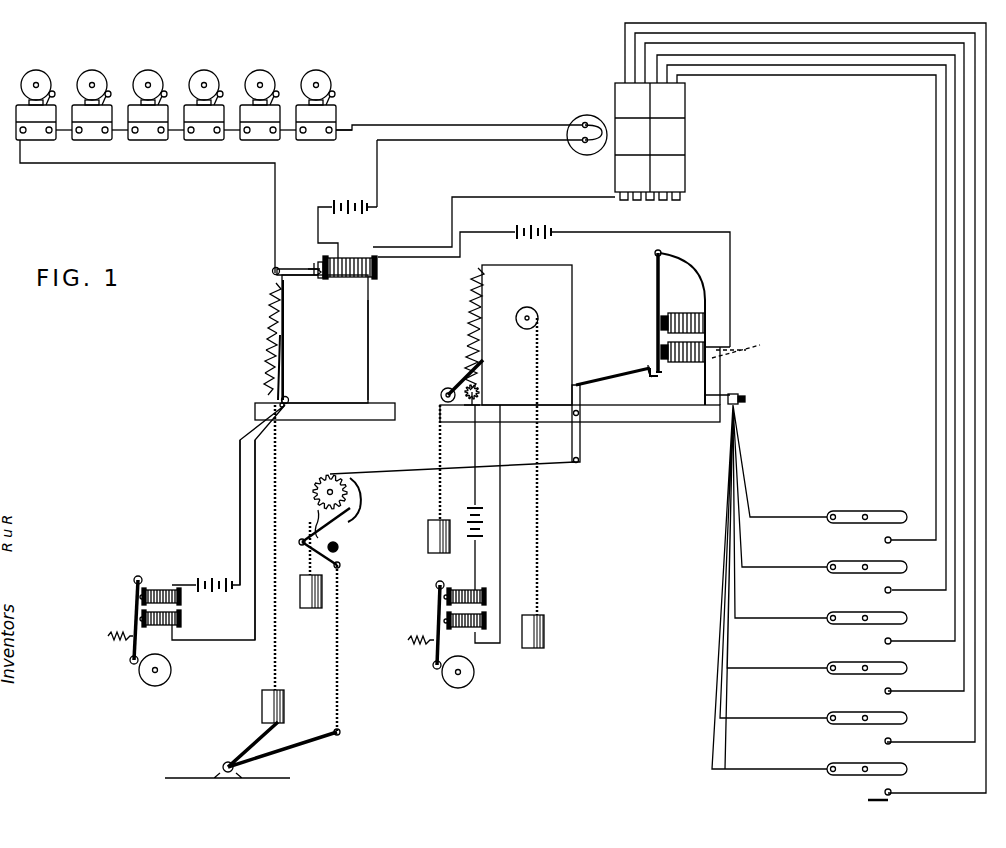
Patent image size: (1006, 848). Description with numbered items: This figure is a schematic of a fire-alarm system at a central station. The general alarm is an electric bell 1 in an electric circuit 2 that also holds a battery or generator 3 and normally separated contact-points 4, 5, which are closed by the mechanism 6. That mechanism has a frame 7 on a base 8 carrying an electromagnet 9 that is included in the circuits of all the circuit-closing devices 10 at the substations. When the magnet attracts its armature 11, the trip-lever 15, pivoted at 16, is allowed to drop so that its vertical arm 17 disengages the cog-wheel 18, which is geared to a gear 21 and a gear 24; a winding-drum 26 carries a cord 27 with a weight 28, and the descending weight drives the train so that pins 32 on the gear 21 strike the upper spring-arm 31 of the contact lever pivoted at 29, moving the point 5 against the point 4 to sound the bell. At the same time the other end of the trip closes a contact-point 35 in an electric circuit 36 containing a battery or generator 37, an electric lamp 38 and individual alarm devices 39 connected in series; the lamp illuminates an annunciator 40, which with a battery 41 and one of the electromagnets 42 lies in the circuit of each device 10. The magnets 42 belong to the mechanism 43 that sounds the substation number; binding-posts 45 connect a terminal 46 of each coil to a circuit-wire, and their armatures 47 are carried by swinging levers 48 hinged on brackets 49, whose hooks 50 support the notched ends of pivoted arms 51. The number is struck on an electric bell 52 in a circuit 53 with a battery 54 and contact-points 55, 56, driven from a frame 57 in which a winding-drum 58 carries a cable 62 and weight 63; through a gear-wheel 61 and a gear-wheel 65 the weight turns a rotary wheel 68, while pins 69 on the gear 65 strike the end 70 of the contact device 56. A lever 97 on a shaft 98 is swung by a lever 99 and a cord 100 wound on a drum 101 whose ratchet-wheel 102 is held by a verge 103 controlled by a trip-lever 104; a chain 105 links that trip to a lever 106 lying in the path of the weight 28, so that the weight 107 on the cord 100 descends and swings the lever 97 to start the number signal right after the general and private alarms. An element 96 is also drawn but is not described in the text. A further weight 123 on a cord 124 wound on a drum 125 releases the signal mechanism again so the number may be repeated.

The electric bell 1 is at (132, 665).
The electric circuit 2 is at (197, 540).
The battery or generator 3 is at (206, 516).
The contact-point 4 is at (289, 397).
The contact-point 5 is at (288, 410).
The mechanism 6 is at (333, 339).
The frame 7 is at (369, 363).
The base 8 is at (373, 420).
The electromagnet 9 is at (350, 258).
The circuit-closing devices 10 is at (809, 602).
The armature 11 is at (312, 265).
The trip-lever 15 is at (299, 259).
The pivot 16 is at (272, 271).
The vertical arm 17 is at (272, 292).
The cog-wheel 18 is at (270, 318).
The gear 21 is at (272, 336).
The gear 24 is at (268, 358).
The winding-drum 26 is at (284, 362).
The cord 27 is at (277, 478).
The weight 28 is at (262, 704).
The pivot 29 is at (276, 404).
The upper spring-arm 31 is at (266, 377).
The pins or projections 32 is at (286, 317).
The contact-point 35 is at (323, 275).
The electric circuit 36 is at (411, 173).
The battery or generator 37 is at (347, 218).
The electric lamp 38 is at (587, 125).
The private or individual alarm devices 39 is at (152, 70).
The annunciator 40 is at (665, 141).
The battery or generator 41 is at (623, 279).
The electromagnets 42 is at (683, 351).
The mechanism 43 is at (580, 424).
The binding-posts 45 is at (742, 393).
The terminal 46 is at (746, 348).
The armatures 47 is at (660, 388).
The swinging levers 48 is at (656, 298).
The supporting arms or brackets 49 is at (700, 282).
The projections or hooks 50 is at (650, 378).
The pivoted arms 51 is at (615, 376).
The electric bell 52 is at (452, 638).
The electric circuit 53 is at (499, 524).
The battery or generator 54 is at (469, 497).
The contact-point 55 is at (478, 393).
The contact-point 56 is at (471, 410).
The frame 57 is at (539, 335).
The winding-drum 58 is at (480, 365).
The gear-wheel 61 is at (465, 366).
The cable 62 is at (437, 502).
The weight 63 is at (428, 548).
The gear-wheel 65 is at (466, 340).
The rotary wheel 68 is at (470, 300).
The projections or pins 69 is at (468, 326).
The end 70 is at (445, 402).
The pivot 96 is at (582, 382).
The lever 97 is at (581, 392).
The shaft 98 is at (579, 416).
The lever 99 is at (580, 461).
The cord or cable 100 is at (350, 487).
The drum 101 is at (446, 463).
The ratchet-wheel 102 is at (318, 508).
The escapement anchor or verge 103 is at (357, 505).
The trip-lever 104 is at (340, 555).
The chain or flexible connection 105 is at (340, 670).
The lever 106 is at (251, 750).
The weight 107 is at (309, 610).
The weight 123 is at (545, 635).
The cord 124 is at (539, 514).
The drum 125 is at (528, 306).